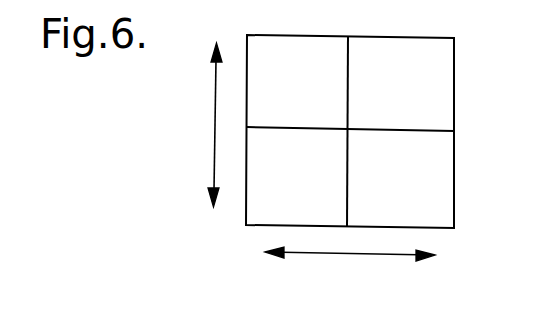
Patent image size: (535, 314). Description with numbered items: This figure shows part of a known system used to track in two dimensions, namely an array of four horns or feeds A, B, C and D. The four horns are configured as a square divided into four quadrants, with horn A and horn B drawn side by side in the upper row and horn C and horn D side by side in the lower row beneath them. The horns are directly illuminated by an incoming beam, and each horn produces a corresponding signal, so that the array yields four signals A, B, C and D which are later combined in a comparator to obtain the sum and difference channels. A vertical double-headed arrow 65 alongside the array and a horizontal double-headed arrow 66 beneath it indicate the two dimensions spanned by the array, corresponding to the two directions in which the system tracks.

The vertical dimension of display area divided into quadrants 65 is at (307, 131).
The horizontal dimension of display area 66 is at (337, 254).
The horn or feed A is at (297, 79).
The horn or feed B is at (395, 79).
The horn or feed C is at (294, 178).
The horn or feed D is at (393, 178).